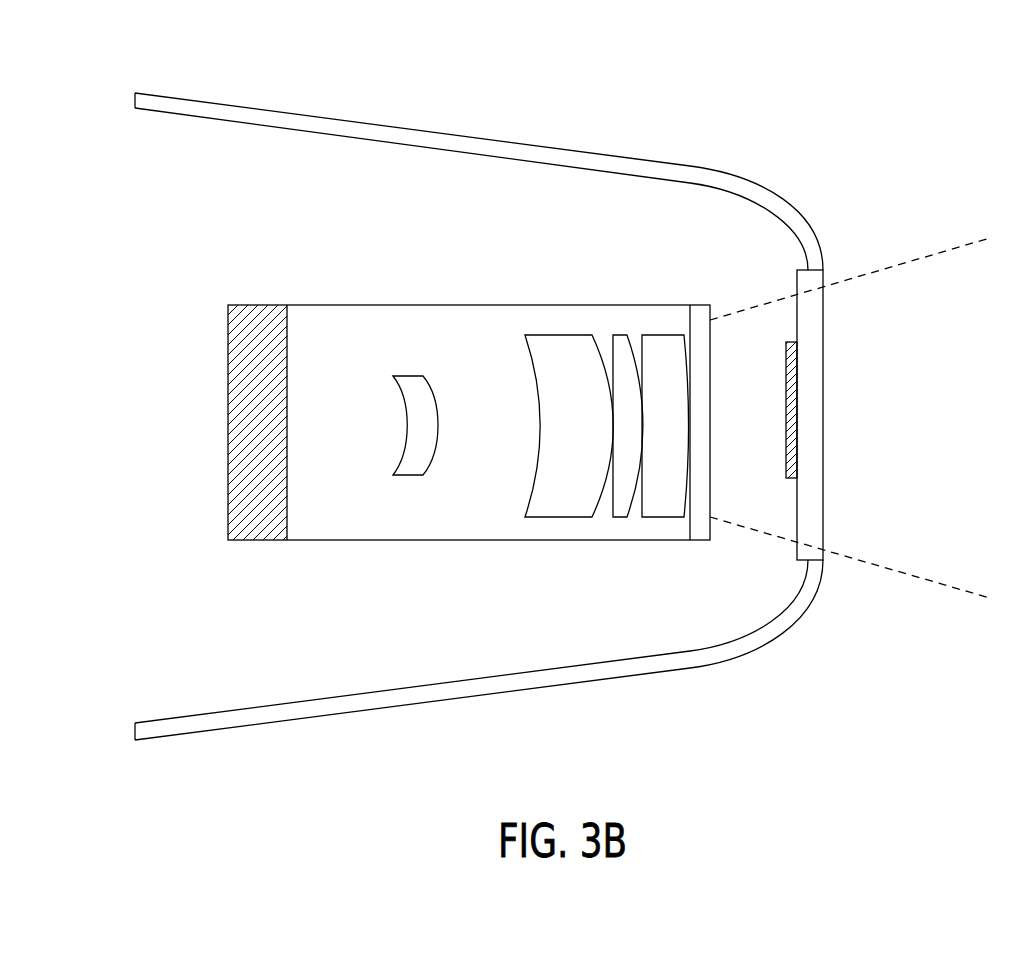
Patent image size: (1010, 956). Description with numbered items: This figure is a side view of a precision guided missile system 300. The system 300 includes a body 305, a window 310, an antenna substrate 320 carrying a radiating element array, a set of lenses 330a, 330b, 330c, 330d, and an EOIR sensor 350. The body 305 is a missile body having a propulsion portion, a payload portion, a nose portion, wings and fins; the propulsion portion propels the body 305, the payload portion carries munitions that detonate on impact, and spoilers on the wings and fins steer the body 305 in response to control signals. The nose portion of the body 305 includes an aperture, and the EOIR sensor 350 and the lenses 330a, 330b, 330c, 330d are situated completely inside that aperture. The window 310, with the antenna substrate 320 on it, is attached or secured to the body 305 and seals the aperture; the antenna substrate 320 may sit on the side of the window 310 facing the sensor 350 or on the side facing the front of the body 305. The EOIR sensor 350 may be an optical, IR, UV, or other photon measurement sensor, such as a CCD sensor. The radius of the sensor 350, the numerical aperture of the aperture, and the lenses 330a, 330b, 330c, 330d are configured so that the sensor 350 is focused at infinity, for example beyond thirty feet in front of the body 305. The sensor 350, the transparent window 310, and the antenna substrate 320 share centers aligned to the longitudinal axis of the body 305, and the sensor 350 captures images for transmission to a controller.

The precision guided missile system 300 is at (103, 50).
The body 305 is at (428, 131).
The window 310 is at (824, 330).
The antenna substrate 320 is at (786, 415).
The lens 330a is at (408, 375).
The lens 330b is at (556, 335).
The lens 330c is at (619, 335).
The lens 330d is at (665, 335).
The EOIR sensor 350 is at (257, 305).